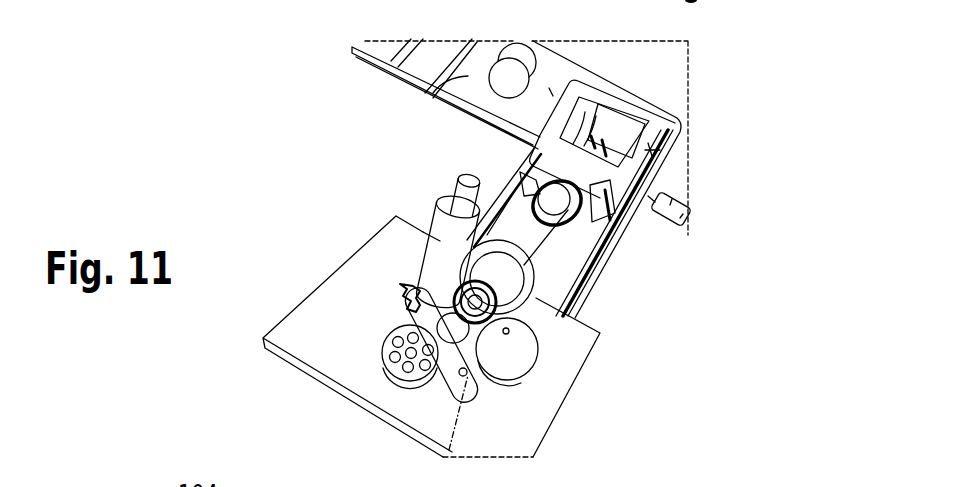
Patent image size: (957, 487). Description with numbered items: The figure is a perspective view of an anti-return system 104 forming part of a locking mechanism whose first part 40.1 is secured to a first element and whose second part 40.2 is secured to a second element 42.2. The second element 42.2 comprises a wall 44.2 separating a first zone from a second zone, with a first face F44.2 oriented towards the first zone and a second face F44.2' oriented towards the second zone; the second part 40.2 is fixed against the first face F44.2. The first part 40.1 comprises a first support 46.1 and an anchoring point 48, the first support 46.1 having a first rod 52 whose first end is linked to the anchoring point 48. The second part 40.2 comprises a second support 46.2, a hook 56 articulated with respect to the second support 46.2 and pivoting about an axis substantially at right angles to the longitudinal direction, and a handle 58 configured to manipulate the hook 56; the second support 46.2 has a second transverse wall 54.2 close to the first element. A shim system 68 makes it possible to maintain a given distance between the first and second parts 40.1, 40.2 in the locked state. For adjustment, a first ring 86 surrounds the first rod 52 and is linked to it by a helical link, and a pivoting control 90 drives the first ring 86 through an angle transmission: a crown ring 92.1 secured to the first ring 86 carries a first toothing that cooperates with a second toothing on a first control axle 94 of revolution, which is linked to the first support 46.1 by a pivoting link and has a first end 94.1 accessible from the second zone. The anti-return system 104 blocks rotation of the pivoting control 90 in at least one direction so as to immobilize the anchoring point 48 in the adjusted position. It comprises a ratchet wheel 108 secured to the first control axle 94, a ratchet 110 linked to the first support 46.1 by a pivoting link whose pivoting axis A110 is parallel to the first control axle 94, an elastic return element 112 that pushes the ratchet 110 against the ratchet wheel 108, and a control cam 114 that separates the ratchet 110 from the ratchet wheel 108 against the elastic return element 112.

The first part 40.1 is at (333, 307).
The second part 40.2 is at (676, 172).
The second element 42.2 is at (385, 77).
The wall 44.2 is at (686, 218).
The first face F44.2 is at (730, 200).
The second face F44.2' is at (723, 242).
The first support 46.1 is at (580, 377).
The second support 46.2 is at (667, 80).
The anchoring point 48 is at (647, 143).
The first rod 52 is at (538, 247).
The second transverse wall 54.2 is at (549, 88).
The hook 56 is at (622, 128).
The handle 58 is at (608, 240).
The shim system 68 is at (485, 75).
The first ring 86 is at (536, 297).
The pivoting control 90 is at (433, 220).
The crown ring 92.1 is at (500, 193).
The first control axle 94 is at (417, 248).
The first end 94.1 is at (457, 182).
The anti-return system 104 is at (397, 268).
The ratchet wheel 108 is at (397, 300).
The ratchet 110 is at (476, 388).
The pivoting axis A110 is at (448, 432).
The elastic return element 112 is at (381, 357).
The control cam 114 is at (518, 350).